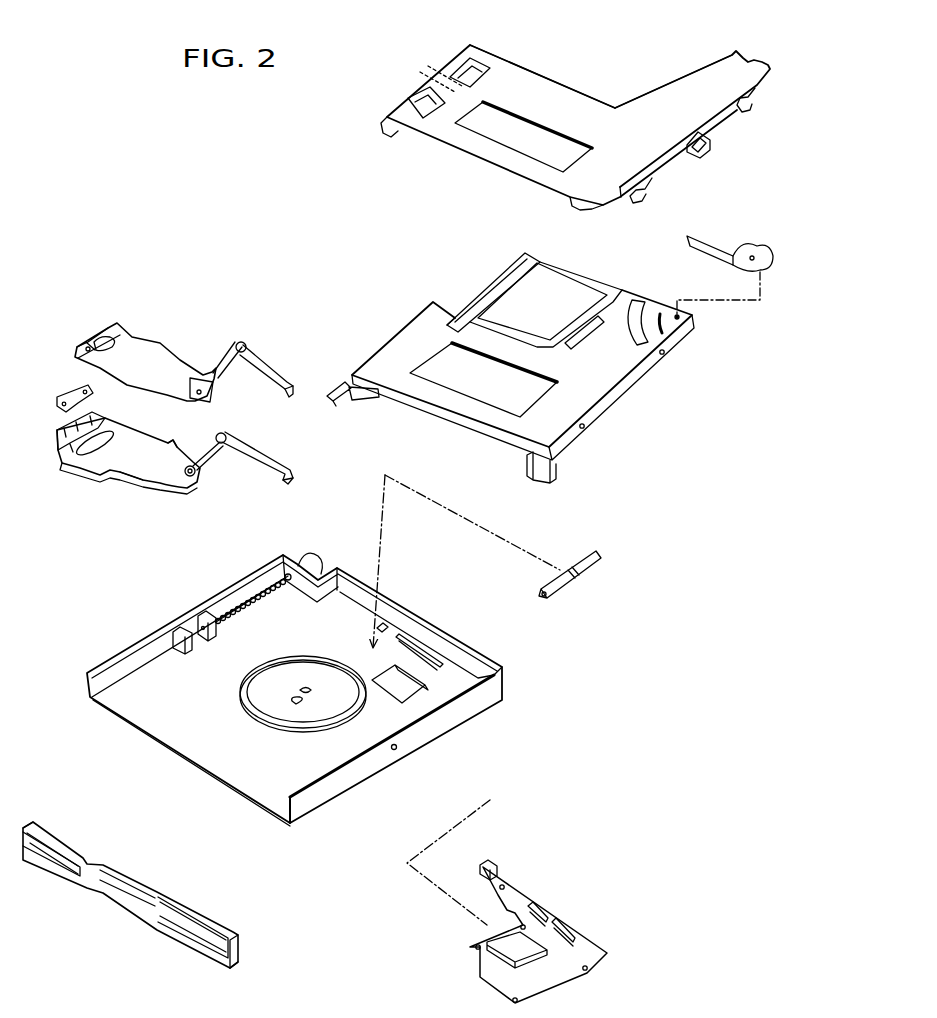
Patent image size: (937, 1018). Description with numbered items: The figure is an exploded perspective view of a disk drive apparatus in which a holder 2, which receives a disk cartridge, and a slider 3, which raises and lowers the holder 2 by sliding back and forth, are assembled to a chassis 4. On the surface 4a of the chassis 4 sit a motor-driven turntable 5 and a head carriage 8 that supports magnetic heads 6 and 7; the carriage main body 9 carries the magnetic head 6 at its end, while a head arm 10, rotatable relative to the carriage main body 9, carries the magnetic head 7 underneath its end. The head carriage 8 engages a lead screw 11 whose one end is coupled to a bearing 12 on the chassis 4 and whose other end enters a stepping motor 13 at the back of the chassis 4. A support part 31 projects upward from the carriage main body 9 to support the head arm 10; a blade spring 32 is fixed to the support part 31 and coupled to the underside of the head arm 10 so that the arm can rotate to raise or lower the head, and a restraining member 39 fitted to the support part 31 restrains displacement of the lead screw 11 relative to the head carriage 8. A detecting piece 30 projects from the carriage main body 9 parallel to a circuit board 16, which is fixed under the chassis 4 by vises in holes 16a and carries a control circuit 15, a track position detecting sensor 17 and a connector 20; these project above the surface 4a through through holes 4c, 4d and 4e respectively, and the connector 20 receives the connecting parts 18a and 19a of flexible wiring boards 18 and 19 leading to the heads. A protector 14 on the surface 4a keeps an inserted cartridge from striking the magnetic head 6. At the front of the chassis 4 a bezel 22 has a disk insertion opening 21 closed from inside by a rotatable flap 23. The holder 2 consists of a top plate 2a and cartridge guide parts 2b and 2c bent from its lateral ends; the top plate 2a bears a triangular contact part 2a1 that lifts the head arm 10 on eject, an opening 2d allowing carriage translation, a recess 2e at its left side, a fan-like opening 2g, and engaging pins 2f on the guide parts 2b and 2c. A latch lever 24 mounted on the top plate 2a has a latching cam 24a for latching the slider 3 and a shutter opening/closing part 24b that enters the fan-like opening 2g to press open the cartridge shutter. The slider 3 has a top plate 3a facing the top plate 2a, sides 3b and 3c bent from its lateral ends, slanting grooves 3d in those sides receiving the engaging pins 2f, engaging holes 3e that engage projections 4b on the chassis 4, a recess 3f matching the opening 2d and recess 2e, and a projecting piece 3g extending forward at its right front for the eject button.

The holder 2 is at (528, 361).
The top plate 2a is at (575, 405).
The contact part 2a1 is at (470, 298).
The cartridge guide part 2b is at (372, 400).
The cartridge guide part 2c is at (526, 478).
The opening 2d is at (553, 292).
The recess 2e is at (487, 283).
The engaging pins 2f is at (667, 358).
The fan-like opening 2g is at (648, 306).
The slider 3 is at (584, 124).
The top plate 3a is at (514, 160).
The side 3b is at (386, 134).
The side 3c is at (677, 146).
The slanting grooves 3d is at (745, 110).
The engaging holes 3e is at (708, 152).
The recess 3f is at (553, 82).
The projecting piece 3g is at (566, 205).
The chassis 4 is at (294, 682).
The surface 4a is at (200, 750).
The projections 4b is at (400, 752).
The through hole 4c is at (398, 694).
The through hole 4d is at (386, 623).
The through hole 4e is at (420, 640).
The turntable 5 is at (258, 695).
The magnetic head 6 is at (200, 480).
The magnetic head 7 is at (212, 398).
The head carriage 8 is at (147, 467).
The carriage main body 9 is at (147, 486).
The head arm 10 is at (149, 363).
The lead screw 11 is at (246, 600).
The bearing 12 is at (200, 612).
The stepping motor 13 is at (305, 556).
The protector 14 is at (570, 592).
The control circuit 15 is at (495, 951).
The circuit board 16 is at (543, 908).
The holes 16a is at (595, 968).
The track position detecting sensor 17 is at (492, 862).
The flexible wiring board 18 is at (281, 451).
The connecting part 18a is at (297, 480).
The flexible wiring board 19 is at (280, 382).
The connecting part 19a is at (296, 396).
The connector 20 is at (565, 915).
The disk insertion opening 21 is at (131, 920).
The bezel 22 is at (226, 962).
The flap 23 is at (118, 878).
The latch lever 24 is at (751, 270).
The latching cam 24a is at (770, 247).
The shutter opening/closing part 24b is at (705, 241).
The detecting piece 30 is at (175, 442).
The support part 31 is at (100, 414).
The blade spring 32 is at (86, 340).
The restraining member 39 is at (66, 392).